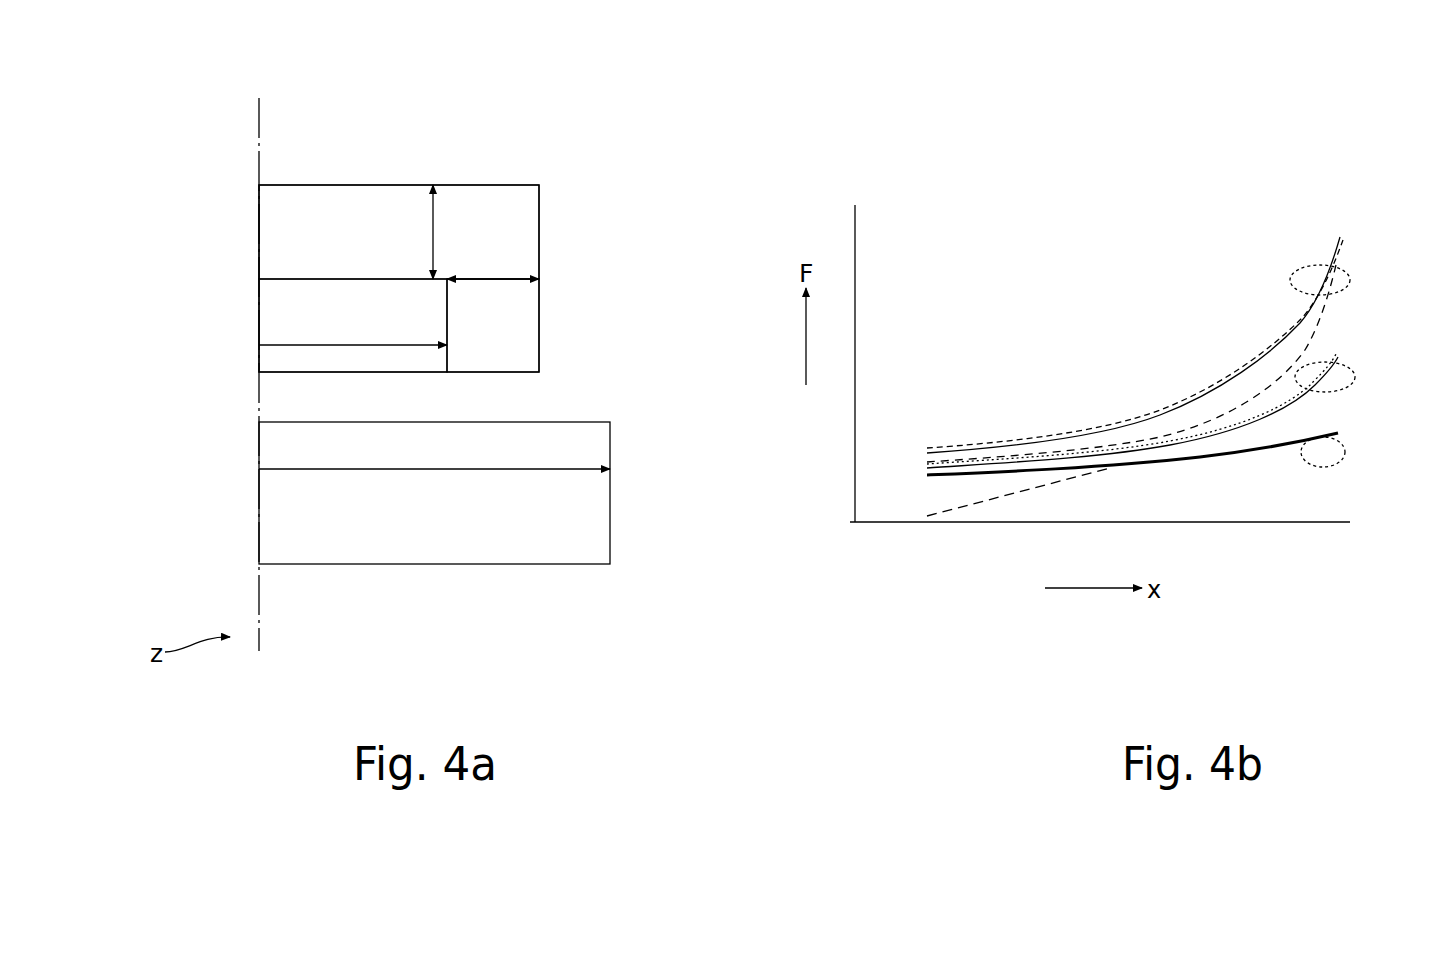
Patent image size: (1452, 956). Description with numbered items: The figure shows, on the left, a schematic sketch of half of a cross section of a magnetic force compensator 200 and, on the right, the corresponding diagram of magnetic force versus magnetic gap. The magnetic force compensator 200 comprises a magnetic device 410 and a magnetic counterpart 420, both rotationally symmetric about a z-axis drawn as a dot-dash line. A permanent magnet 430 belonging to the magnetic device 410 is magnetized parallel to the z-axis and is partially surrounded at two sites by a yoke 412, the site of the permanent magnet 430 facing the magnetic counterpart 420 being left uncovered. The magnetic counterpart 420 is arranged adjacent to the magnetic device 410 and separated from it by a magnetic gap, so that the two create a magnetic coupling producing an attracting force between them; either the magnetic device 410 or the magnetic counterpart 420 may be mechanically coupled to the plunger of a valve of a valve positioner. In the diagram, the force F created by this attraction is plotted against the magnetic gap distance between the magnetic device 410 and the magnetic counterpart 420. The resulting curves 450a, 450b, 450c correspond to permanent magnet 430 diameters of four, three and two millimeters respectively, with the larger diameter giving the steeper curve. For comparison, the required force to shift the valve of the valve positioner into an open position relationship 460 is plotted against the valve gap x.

In FIG. 4A, the magnetic force compensator 200 is at (562, 158).
In FIG. 4A, the magnetic device 410 is at (246, 228).
In FIG. 4A, the yoke 412 is at (513, 217).
In FIG. 4A, the permanent magnet 430 is at (292, 304).
In FIG. 4A, the magnetic counterpart 420 is at (237, 514).
In FIG. 4B, the curve for four millimeter magnet diameter 450a is at (1348, 262).
In FIG. 4B, the curve for three millimeter magnet diameter 450b is at (1335, 363).
In FIG. 4B, the curve for two millimeter magnet diameter 450c is at (1330, 457).
In FIG. 4B, the required force relationship 460 is at (1082, 486).